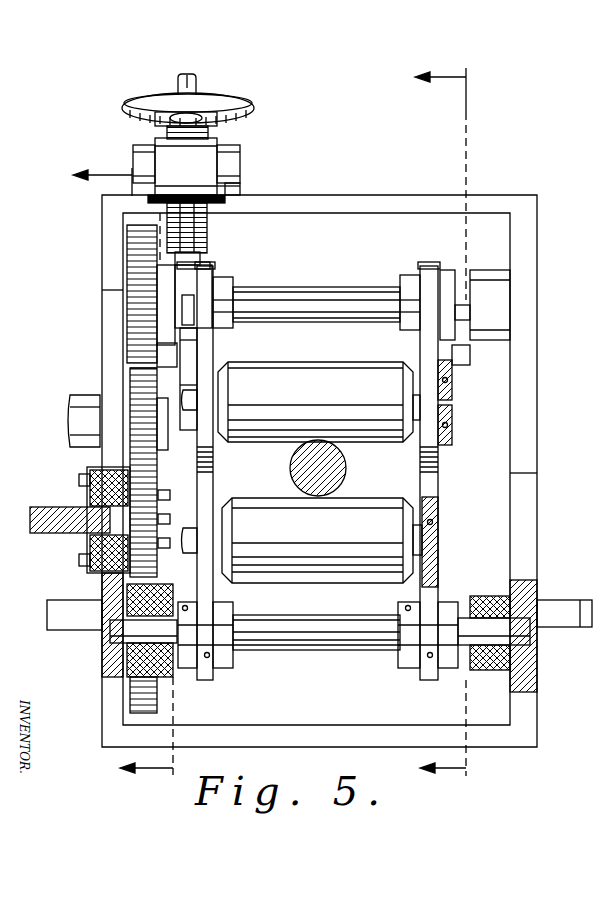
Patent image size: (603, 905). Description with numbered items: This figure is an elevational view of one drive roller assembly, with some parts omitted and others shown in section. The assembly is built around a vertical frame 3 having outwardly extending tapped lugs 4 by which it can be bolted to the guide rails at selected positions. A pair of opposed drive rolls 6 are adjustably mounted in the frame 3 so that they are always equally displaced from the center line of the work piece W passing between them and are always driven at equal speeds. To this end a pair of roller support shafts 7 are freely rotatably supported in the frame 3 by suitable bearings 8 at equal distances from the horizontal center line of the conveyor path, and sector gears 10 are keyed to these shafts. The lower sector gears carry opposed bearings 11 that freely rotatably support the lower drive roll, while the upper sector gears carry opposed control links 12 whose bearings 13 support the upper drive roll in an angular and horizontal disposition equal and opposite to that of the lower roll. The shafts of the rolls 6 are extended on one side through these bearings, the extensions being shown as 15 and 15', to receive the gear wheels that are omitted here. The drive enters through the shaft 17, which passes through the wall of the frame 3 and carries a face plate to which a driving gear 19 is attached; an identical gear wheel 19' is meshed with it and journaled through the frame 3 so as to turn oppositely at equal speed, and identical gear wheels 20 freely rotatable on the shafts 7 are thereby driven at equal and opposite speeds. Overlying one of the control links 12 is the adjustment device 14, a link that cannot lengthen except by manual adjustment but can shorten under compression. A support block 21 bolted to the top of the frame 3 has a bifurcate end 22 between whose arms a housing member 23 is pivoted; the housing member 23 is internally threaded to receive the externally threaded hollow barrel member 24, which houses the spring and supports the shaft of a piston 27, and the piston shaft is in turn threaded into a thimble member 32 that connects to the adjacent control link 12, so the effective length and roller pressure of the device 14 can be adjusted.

The vertical frame 3 is at (525, 249).
The tapped lugs 4 is at (75, 606).
The drive rolls 6 is at (318, 370).
The roller support shafts 7 is at (326, 298).
The bearings 8 is at (106, 645).
The sector gears 10 is at (206, 436).
The bearings 11 is at (439, 522).
The control links 12 is at (192, 352).
The bearings 13 is at (451, 392).
The adjustment device 14 is at (126, 147).
The shaft extensions 15 is at (127, 390).
The shaft extension 15' is at (181, 555).
The shaft 17 is at (62, 515).
The driving gear 19 is at (157, 472).
The gear wheel 19' is at (109, 355).
The gear wheels 20 is at (140, 254).
The support block 21 is at (238, 193).
The bifurcate end 22 is at (235, 162).
The housing member 23 is at (202, 178).
The barrel member 24 is at (206, 242).
The piston 27 is at (204, 262).
The thimble member 32 is at (196, 282).
The work piece W is at (332, 468).